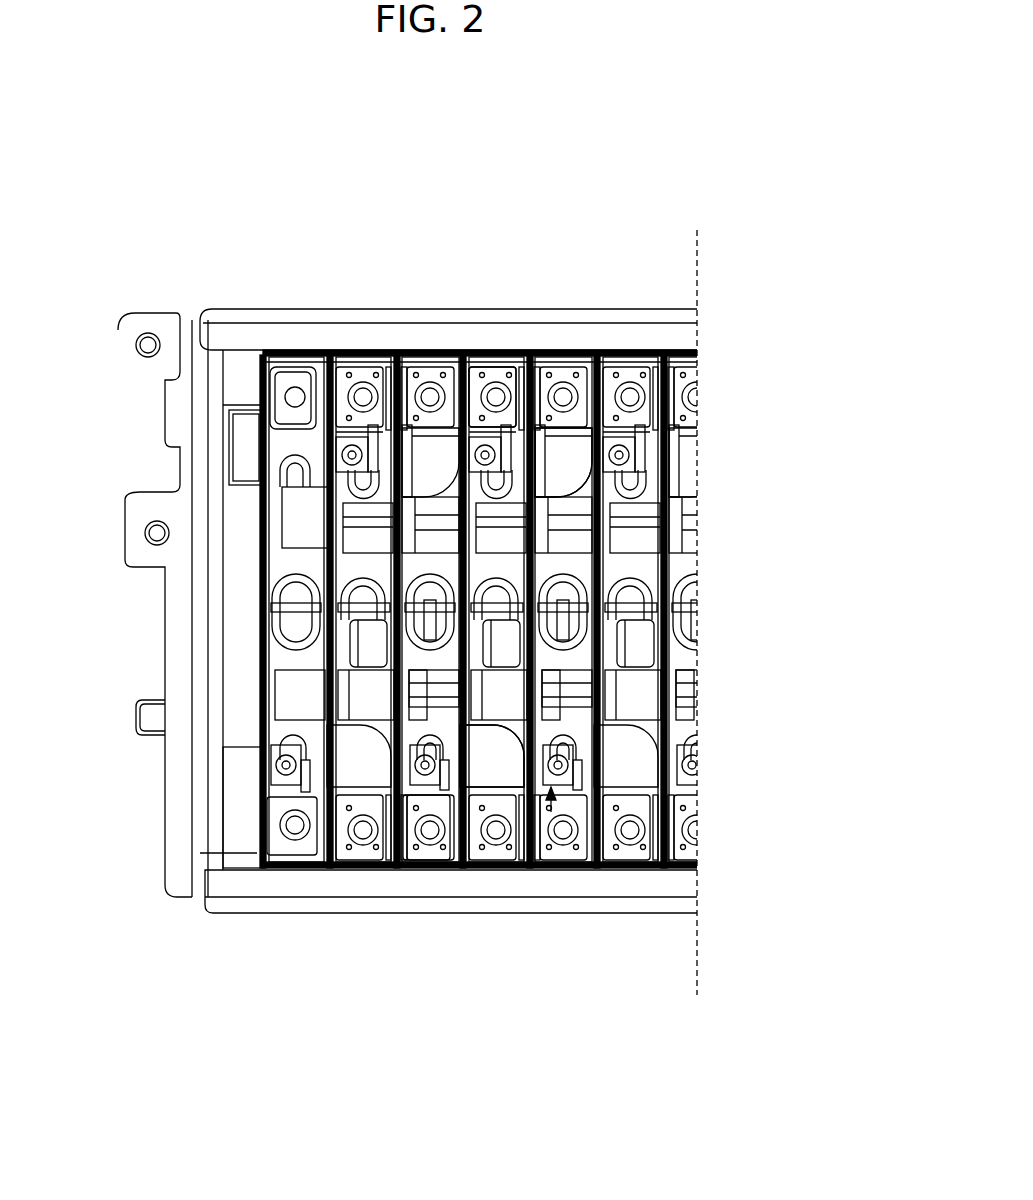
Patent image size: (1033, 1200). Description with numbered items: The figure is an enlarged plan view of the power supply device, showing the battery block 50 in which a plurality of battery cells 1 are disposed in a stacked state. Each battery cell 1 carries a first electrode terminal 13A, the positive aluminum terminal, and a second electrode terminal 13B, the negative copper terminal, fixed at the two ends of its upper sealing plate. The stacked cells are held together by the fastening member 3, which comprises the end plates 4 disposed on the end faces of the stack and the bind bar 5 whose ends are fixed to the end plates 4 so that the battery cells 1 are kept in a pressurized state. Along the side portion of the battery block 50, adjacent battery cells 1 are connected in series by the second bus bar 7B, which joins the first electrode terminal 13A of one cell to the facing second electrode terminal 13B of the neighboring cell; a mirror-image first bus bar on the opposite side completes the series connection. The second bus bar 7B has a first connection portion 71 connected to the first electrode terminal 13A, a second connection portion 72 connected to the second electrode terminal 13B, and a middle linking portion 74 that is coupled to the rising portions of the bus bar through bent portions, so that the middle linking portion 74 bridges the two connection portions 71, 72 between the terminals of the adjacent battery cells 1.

The battery cell 1 is at (288, 660).
The fastening member 3 is at (277, 1043).
The end plate 4 is at (178, 753).
The bind bar 5 is at (263, 318).
The second bus bar 7B is at (650, 200).
The first electrode terminal 13A is at (563, 467).
The second electrode terminal 13B is at (455, 378).
The battery block 50 is at (297, 212).
The first connection portion 71 is at (560, 400).
The second connection portion 72 is at (468, 397).
The middle linking portion 74 is at (607, 400).